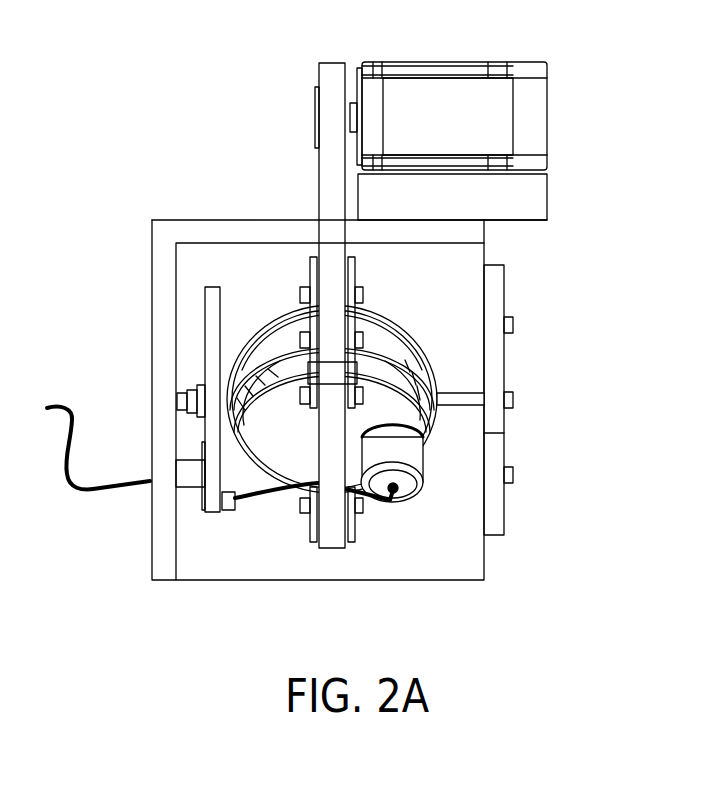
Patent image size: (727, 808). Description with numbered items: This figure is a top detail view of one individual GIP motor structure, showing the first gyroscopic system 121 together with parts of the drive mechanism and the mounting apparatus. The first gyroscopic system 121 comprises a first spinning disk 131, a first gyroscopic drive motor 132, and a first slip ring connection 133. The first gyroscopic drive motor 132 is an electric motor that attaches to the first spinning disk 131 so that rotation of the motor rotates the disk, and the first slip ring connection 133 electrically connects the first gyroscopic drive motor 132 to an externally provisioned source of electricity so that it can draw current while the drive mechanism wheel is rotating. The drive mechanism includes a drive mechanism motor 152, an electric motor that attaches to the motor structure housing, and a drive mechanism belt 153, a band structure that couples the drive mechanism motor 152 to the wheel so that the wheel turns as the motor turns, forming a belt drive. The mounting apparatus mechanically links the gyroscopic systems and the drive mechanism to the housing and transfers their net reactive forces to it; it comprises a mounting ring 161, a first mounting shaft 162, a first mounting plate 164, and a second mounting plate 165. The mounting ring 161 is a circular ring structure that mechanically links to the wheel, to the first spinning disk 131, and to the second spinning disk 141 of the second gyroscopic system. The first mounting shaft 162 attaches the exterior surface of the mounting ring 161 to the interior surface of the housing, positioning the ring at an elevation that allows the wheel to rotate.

The first gyroscopic system 121 is at (116, 108).
The first spinning disk 131 is at (277, 462).
The first gyroscopic drive motor 132 is at (418, 458).
The first slip ring connection 133 is at (230, 512).
The second spinning disk 141 is at (405, 327).
The drive mechanism motor 152 is at (530, 100).
The drive mechanism belt 153 is at (343, 186).
The mounting ring 161 is at (433, 377).
The first mounting shaft 162 is at (467, 405).
The first mounting plate 164 is at (357, 271).
The second mounting plate 165 is at (310, 270).